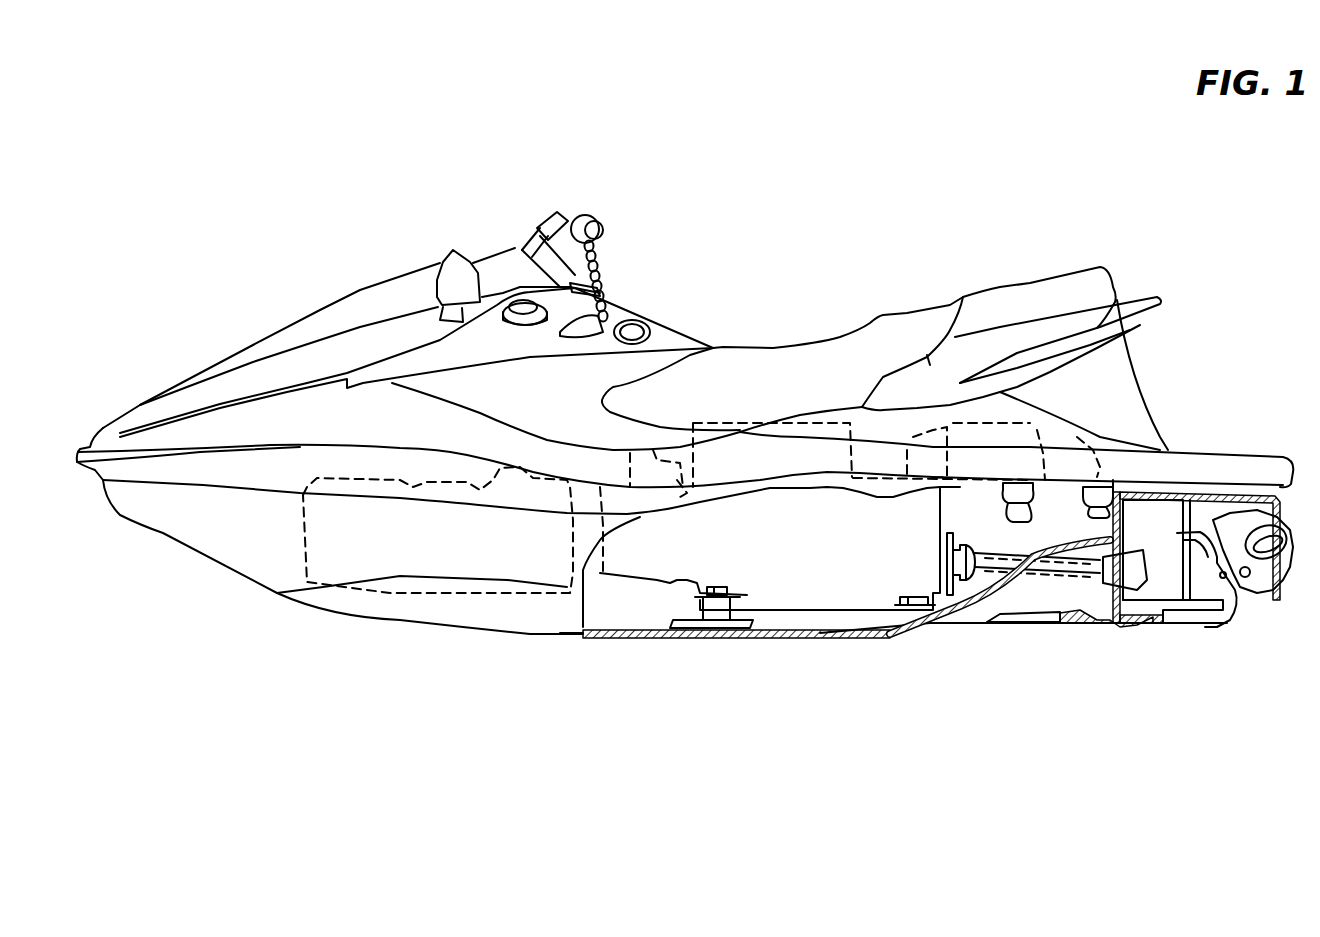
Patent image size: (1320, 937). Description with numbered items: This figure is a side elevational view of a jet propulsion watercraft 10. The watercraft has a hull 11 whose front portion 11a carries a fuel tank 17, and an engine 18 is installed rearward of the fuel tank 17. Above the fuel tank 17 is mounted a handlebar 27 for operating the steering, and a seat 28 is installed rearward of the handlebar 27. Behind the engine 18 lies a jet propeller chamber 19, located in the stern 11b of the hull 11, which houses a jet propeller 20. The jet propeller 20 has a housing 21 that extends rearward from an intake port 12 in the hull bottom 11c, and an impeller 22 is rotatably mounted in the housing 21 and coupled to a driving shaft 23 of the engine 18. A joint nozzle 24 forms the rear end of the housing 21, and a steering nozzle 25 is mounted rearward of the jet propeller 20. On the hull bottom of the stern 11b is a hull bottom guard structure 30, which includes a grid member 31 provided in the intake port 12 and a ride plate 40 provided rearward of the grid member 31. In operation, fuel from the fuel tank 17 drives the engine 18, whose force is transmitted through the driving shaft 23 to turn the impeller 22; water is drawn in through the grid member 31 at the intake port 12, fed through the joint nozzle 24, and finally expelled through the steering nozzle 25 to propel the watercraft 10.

The jet propulsion watercraft 10 is at (722, 167).
The hull 11 is at (658, 305).
The front portion of the hull 11a is at (337, 305).
The stern 11b is at (1197, 507).
The hull bottom 11c is at (783, 640).
The intake port 12 is at (987, 627).
The fuel tank 17 is at (405, 552).
The engine 18 is at (663, 557).
The jet propeller chamber 19 is at (1170, 530).
The jet propeller 20 is at (1133, 490).
The housing 21 is at (1066, 500).
The impeller 22 is at (1127, 622).
The driving shaft 23 is at (933, 617).
The joint nozzle 24 is at (1230, 600).
The steering nozzle 25 is at (1250, 598).
The handlebar 27 is at (568, 212).
The seat 28 is at (845, 346).
The hull bottom guard structure 30 is at (1113, 727).
The grid member 31 is at (1037, 627).
The ride plate 40 is at (1117, 620).